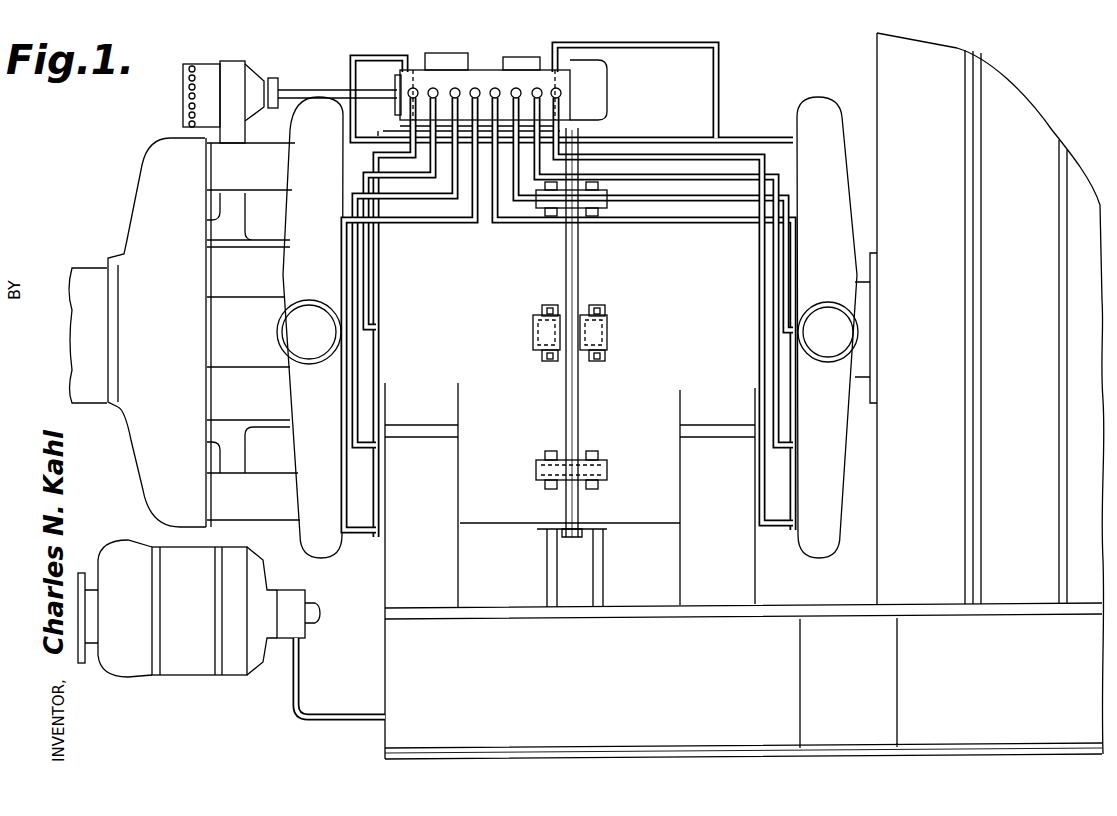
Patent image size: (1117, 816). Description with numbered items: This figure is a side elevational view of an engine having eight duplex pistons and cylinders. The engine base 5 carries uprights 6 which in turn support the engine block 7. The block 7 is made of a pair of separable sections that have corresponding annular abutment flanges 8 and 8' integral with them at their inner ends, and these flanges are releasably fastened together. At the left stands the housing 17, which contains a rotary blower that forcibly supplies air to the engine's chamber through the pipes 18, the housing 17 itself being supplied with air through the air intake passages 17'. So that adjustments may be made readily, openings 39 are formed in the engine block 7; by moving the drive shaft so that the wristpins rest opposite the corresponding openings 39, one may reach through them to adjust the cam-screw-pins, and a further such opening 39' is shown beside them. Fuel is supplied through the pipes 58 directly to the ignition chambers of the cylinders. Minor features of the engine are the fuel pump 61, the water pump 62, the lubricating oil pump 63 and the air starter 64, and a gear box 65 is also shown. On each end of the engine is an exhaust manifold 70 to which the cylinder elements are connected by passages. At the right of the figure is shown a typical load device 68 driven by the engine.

The engine base 5 is at (393, 672).
The uprights 6 is at (460, 575).
The engine block 7 is at (627, 148).
The annular abutment flange 8 is at (563, 332).
The annular abutment flange 8' is at (589, 333).
The housing 17 is at (146, 332).
The air intake passages 17' is at (72, 335).
The pipes 18 is at (240, 383).
The openings 39 is at (570, 335).
The clamp 39' is at (613, 333).
The fuel pipes 58 is at (666, 197).
The fuel pump 61 is at (485, 77).
The water pump 62 is at (143, 677).
The lubricating oil pump 63 is at (286, 640).
The air starter 64 is at (205, 71).
The gear box 65 is at (220, 330).
The load device 68 is at (1042, 143).
The exhaust manifold 70 is at (330, 556).